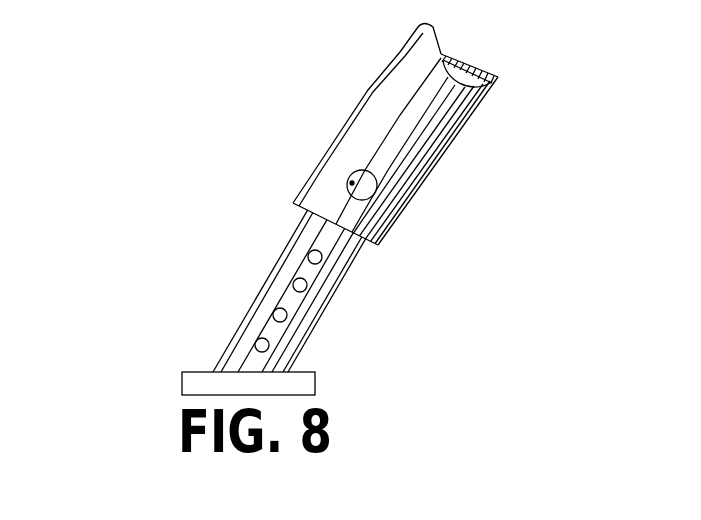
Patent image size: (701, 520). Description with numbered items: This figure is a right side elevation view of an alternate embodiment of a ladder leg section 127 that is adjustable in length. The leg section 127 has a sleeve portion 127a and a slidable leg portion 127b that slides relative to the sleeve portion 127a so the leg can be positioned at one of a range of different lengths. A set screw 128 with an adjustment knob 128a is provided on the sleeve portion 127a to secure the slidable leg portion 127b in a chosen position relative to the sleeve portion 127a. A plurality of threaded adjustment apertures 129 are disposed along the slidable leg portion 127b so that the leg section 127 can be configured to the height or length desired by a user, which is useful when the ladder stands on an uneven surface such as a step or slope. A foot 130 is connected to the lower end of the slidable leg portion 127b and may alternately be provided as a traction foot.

The leg section 127 is at (362, 90).
The sleeve portion 127a is at (418, 138).
The slidable leg portion 127b is at (264, 283).
The set screw 128 is at (377, 180).
The adjustment knob 128a is at (352, 183).
The threaded adjustment apertures 129 is at (307, 283).
The foot 130 is at (193, 398).